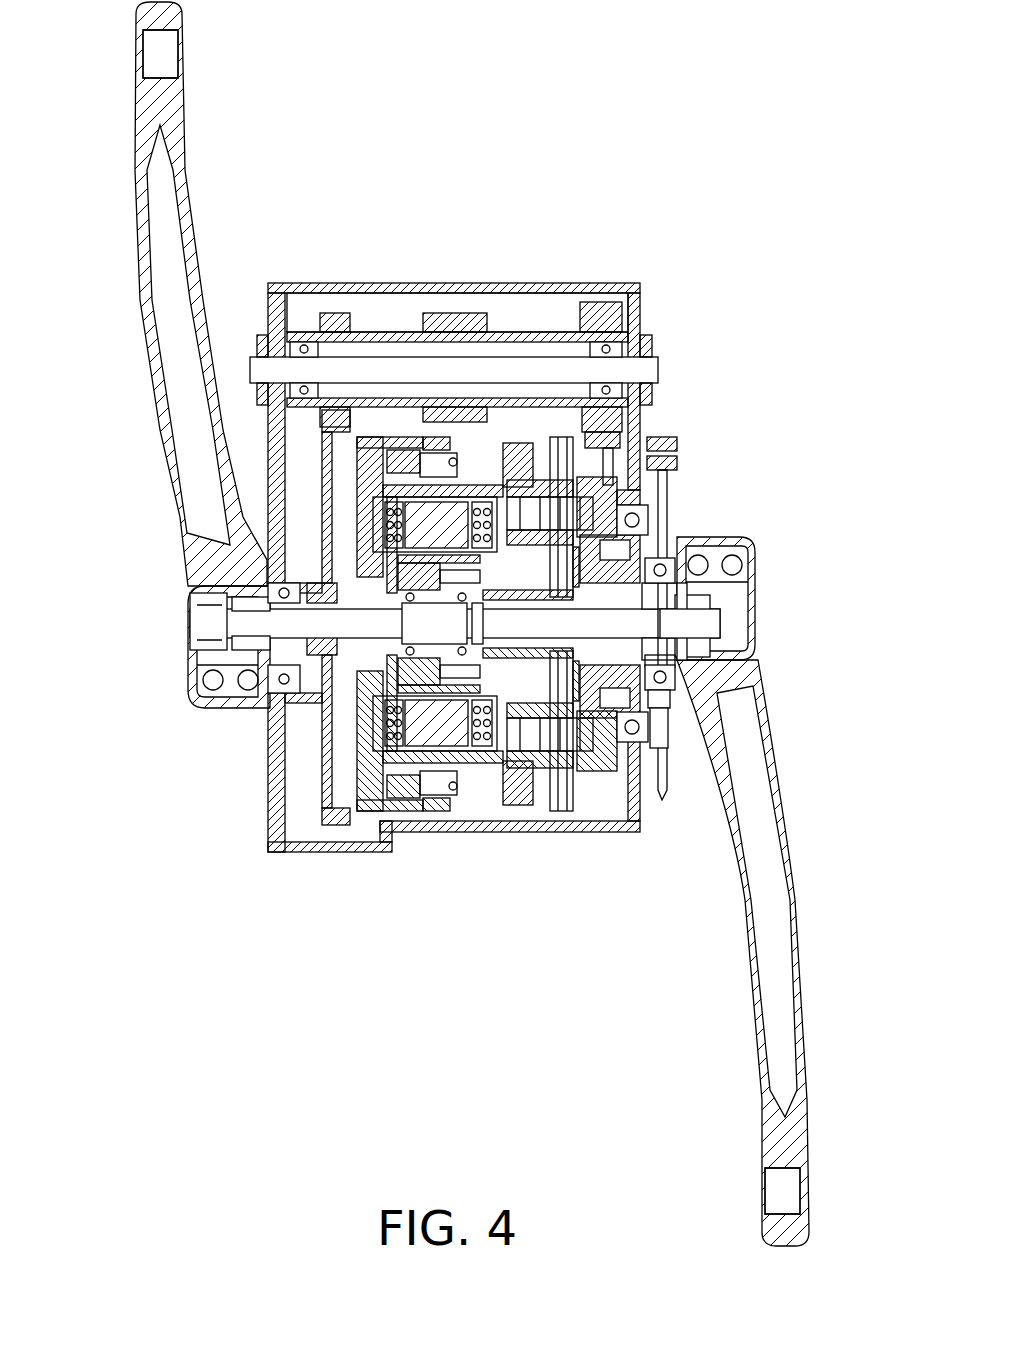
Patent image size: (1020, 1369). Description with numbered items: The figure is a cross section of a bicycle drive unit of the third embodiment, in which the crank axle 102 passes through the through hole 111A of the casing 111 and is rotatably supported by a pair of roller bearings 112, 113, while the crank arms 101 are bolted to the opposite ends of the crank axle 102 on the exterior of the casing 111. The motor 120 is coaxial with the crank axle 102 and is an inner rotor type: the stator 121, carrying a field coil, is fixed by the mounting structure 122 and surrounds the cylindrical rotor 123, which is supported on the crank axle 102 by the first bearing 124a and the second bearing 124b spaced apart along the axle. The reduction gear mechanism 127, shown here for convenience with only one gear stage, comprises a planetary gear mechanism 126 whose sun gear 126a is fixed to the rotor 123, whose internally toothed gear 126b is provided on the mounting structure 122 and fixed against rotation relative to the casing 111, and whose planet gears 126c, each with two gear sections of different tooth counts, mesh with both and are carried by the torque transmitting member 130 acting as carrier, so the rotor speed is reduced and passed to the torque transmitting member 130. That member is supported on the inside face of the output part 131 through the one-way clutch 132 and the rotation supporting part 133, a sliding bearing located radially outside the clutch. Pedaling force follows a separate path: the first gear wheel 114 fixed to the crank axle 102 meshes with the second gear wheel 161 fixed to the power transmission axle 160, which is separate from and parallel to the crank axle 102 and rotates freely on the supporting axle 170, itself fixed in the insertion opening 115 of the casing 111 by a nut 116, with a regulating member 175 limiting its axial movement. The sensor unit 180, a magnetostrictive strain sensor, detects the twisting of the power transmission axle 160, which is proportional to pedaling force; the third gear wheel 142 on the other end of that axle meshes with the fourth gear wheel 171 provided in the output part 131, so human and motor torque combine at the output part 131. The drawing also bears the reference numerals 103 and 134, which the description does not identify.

The crank arm 101 is at (135, 233).
The crank axle 102 is at (285, 745).
The sprocket 103 is at (664, 803).
The casing 111 is at (330, 853).
The through hole 111A is at (195, 605).
The roller bearing 112 is at (250, 705).
The roller bearing 113 is at (678, 690).
The first gear wheel 114 is at (322, 780).
The insertion opening 115 is at (262, 368).
The nut 116 is at (262, 398).
The motor 120 is at (300, 853).
The stator 121 is at (452, 795).
The mounting structure 122 is at (420, 812).
The rotor 123 is at (488, 800).
The first bearing 124a is at (392, 812).
The second bearing 124b is at (525, 800).
The planetary gear mechanism 126 is at (612, 480).
The sun gear 126a is at (715, 650).
The internally toothed gear 126b is at (520, 455).
The planet gear 126c is at (665, 668).
The reduction gear mechanism 127 is at (712, 550).
The torque transmitting member 130 is at (655, 520).
The output part 131 is at (730, 540).
The one-way clutch 132 is at (672, 705).
The rotation supporting part 133 is at (672, 745).
The one-way clutch 134 is at (650, 497).
The third gear wheel 142 is at (598, 320).
The power transmission axle 160 is at (404, 340).
The second gear wheel 161 is at (333, 313).
The supporting axle 170 is at (374, 345).
The fourth gear wheel 171 is at (640, 432).
The regulating member 175 is at (292, 345).
The sensor unit 180 is at (455, 313).